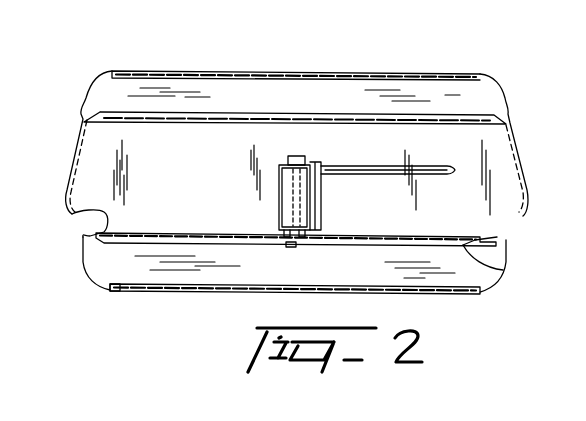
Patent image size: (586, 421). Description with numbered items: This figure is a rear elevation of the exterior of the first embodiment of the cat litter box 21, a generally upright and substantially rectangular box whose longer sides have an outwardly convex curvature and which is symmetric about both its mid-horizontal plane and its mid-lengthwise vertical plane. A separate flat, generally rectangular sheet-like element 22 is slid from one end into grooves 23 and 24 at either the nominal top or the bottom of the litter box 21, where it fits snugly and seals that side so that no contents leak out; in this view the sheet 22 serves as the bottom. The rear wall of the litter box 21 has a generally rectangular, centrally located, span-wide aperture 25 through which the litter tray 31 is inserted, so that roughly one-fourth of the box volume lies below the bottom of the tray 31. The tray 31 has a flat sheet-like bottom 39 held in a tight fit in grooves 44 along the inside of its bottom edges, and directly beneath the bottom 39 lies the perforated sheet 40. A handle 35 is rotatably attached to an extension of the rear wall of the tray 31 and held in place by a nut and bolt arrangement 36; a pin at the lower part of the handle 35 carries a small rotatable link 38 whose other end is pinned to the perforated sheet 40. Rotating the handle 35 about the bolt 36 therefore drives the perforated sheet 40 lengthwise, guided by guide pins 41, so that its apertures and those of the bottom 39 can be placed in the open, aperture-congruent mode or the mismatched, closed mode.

The cat litter box 21 is at (505, 97).
The sheet-like element 22 is at (433, 292).
The groove 23 is at (118, 290).
The groove 24 is at (136, 76).
The aperture 25 is at (226, 117).
The litter tray 31 is at (95, 155).
The handle 35 is at (401, 165).
The nut and bolt arrangement 36 is at (297, 156).
The link 38 is at (305, 244).
The bottom 39 is at (463, 245).
The perforated sheet 40 is at (503, 270).
The guide pins 41 is at (155, 240).
The grooves 44 is at (90, 232).